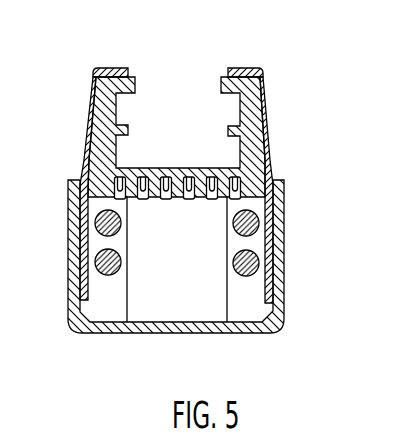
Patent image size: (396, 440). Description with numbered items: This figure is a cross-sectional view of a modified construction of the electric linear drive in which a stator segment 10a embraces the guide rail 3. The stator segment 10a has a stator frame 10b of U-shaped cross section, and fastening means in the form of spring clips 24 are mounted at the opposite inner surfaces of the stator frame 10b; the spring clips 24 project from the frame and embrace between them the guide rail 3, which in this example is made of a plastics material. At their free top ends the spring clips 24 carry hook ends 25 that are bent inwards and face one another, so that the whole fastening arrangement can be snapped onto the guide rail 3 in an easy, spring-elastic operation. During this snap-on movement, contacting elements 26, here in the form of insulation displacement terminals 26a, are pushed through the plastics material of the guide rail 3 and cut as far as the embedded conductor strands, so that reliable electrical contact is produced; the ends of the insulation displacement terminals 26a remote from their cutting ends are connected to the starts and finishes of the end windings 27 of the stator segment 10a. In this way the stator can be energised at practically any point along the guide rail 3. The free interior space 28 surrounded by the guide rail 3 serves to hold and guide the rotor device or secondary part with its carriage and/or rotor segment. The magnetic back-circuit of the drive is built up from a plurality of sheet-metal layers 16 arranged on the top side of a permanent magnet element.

The guide rail 3 is at (255, 119).
The stator segment 10a is at (248, 315).
The stator frame 10b is at (283, 251).
The sheet-metal layers 16 is at (148, 308).
The spring clips 24 is at (272, 165).
The hook ends 25 is at (110, 68).
The contacting elements 26 is at (162, 206).
The insulation displacement terminals 26a is at (190, 203).
The end windings 27 is at (105, 223).
The free interior space 28 is at (189, 132).